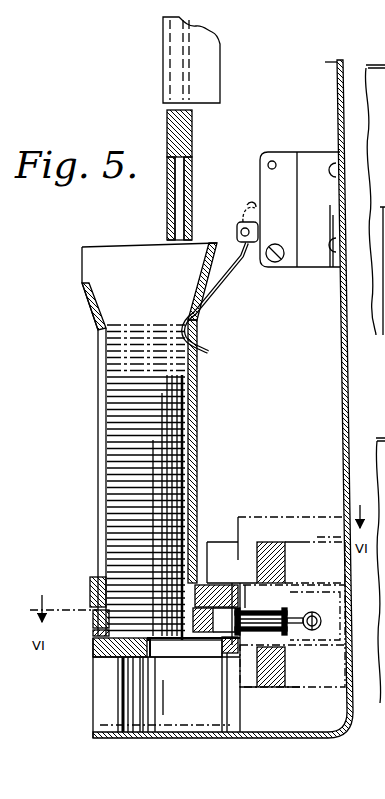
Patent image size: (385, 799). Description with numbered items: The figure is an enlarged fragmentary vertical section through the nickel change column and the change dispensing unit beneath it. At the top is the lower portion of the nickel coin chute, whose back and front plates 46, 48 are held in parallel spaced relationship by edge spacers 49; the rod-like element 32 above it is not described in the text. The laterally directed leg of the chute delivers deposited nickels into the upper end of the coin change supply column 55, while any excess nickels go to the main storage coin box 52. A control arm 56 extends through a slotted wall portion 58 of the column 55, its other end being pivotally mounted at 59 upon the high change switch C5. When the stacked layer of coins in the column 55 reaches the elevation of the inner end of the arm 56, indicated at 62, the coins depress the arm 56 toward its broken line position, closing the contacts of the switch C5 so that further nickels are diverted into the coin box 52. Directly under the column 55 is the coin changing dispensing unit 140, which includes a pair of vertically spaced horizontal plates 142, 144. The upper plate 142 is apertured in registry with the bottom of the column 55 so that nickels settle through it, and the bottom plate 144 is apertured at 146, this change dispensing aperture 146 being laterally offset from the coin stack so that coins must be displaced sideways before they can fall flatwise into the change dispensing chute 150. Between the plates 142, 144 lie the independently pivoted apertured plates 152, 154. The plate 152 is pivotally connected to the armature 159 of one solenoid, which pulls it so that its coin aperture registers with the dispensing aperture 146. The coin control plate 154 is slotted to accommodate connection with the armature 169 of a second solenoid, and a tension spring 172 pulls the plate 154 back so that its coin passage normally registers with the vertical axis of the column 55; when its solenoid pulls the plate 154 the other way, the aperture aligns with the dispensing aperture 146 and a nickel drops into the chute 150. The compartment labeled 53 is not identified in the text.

The rod 32 is at (210, 71).
The edge spacer 49 is at (180, 133).
The back plate 46 is at (193, 187).
The front plate 48 is at (167, 216).
The pivot 59 is at (238, 227).
The control arm 56 is at (217, 292).
The slotted wall portion 58 is at (200, 275).
The elevation of inner arm end 62 is at (145, 327).
The coin change supply column 55 is at (98, 360).
The high change switch C5 is at (325, 203).
The armature of solenoid S3 159 is at (268, 542).
The armature of solenoid S2 169 is at (272, 687).
The upper compartment 53 is at (322, 575).
The main storage coin box 52 is at (323, 675).
The tension spring 172 is at (312, 614).
The upper plate 142 is at (90, 580).
The apertured plate 152 is at (92, 610).
The coin control plate 154 is at (95, 637).
The bottom plate 144 is at (93, 653).
The coin changing dispensing unit 140 is at (80, 647).
The change dispensing aperture 146 is at (182, 647).
The change dispensing chute 150 is at (188, 715).